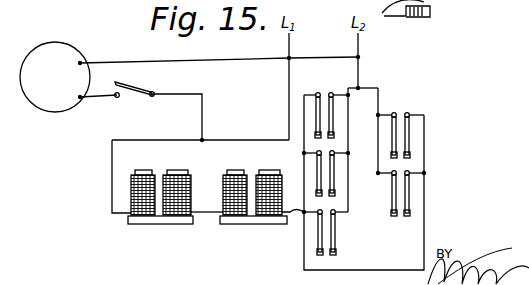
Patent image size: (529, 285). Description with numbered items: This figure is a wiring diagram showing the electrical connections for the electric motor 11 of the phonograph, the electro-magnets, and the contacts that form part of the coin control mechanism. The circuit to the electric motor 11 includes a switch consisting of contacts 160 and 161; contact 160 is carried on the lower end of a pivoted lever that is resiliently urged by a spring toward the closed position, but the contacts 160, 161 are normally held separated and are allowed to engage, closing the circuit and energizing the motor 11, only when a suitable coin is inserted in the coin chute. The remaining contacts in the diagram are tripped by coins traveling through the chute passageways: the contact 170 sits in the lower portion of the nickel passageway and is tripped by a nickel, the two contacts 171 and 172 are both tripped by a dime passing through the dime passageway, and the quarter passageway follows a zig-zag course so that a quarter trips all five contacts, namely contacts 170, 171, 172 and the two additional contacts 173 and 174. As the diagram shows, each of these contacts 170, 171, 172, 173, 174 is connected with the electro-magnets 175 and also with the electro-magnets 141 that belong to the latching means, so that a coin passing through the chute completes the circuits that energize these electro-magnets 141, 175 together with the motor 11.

The electric motor 11 is at (57, 108).
The switch contact 160 is at (137, 85).
The switch contact 161 is at (117, 100).
The electro-magnets 141 is at (150, 216).
The electro-magnets 175 is at (235, 216).
The electric contact 171 is at (315, 128).
The electric contact 174 is at (335, 196).
The electric contact 172 is at (336, 250).
The electric contact 173 is at (409, 150).
The electric contact 170 is at (409, 205).